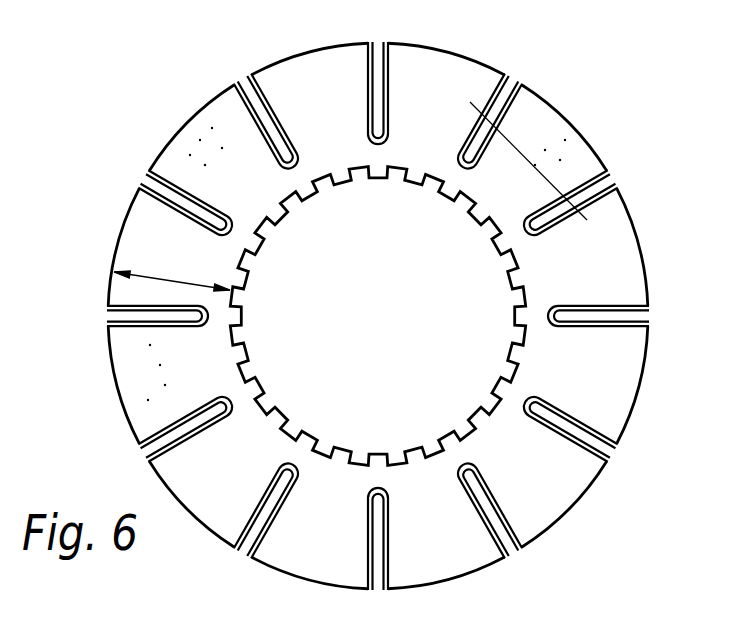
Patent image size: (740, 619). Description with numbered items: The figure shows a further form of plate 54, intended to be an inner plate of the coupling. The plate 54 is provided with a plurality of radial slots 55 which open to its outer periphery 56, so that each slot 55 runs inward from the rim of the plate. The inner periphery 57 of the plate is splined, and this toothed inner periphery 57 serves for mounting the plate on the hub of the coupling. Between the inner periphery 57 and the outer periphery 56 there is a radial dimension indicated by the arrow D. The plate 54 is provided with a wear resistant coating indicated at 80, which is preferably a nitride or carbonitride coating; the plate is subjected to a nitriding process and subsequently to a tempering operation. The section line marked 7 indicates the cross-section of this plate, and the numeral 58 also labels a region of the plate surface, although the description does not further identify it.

The plate 54 is at (447, 80).
The radial slots 55 is at (248, 85).
The outer periphery 56 is at (193, 130).
The inner periphery 57 is at (284, 216).
The friction facing segment 58 is at (553, 137).
The wear resistant coating 80 is at (140, 392).
The section line 7- 7 is at (480, 150).
The radial dimension D is at (172, 269).